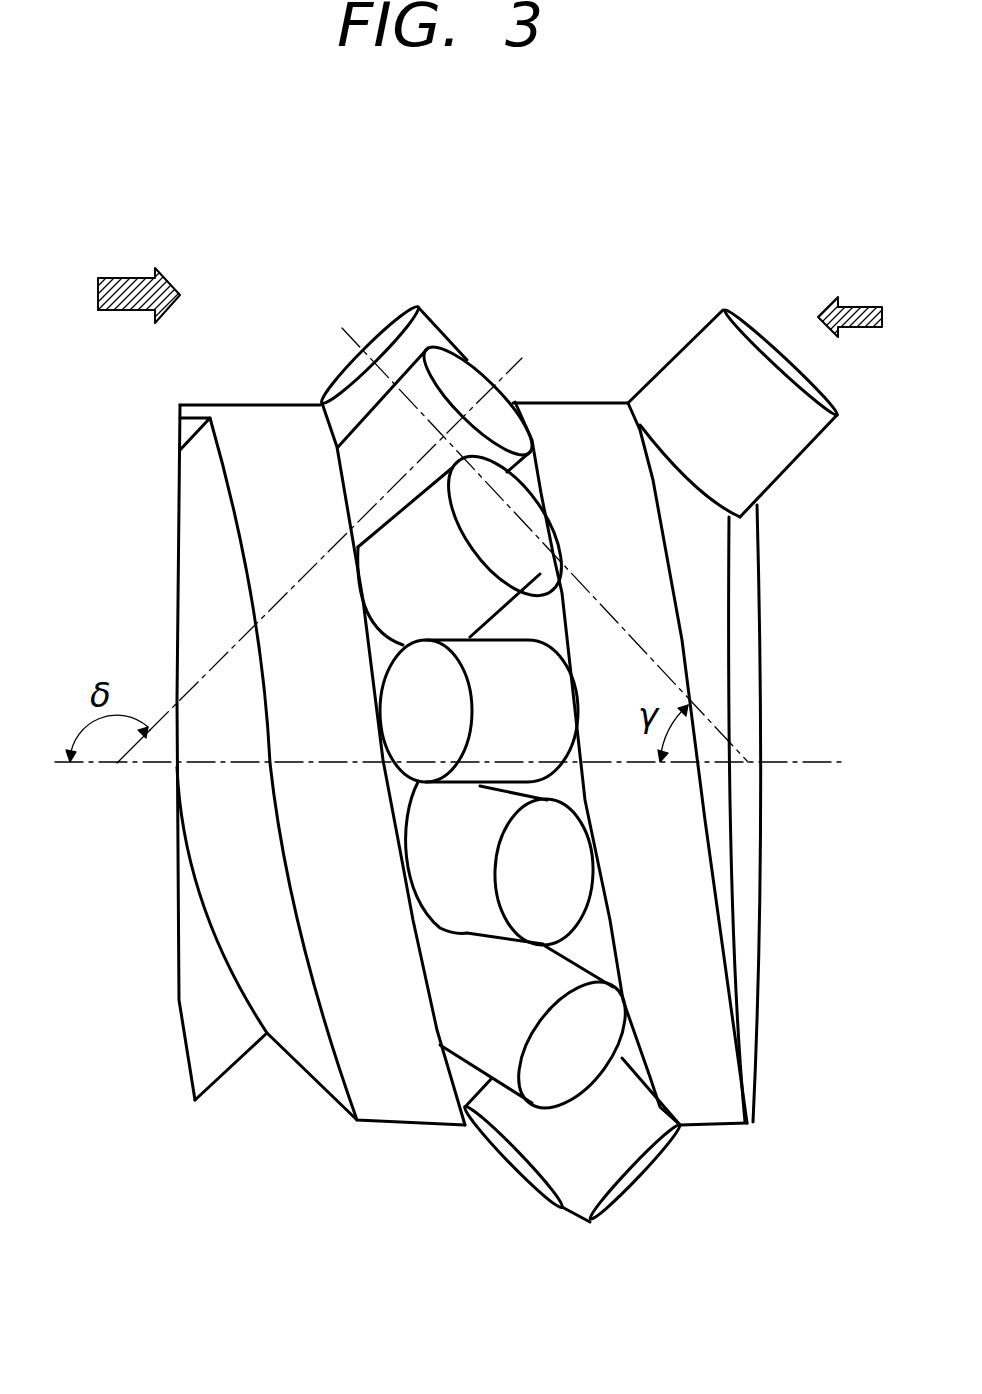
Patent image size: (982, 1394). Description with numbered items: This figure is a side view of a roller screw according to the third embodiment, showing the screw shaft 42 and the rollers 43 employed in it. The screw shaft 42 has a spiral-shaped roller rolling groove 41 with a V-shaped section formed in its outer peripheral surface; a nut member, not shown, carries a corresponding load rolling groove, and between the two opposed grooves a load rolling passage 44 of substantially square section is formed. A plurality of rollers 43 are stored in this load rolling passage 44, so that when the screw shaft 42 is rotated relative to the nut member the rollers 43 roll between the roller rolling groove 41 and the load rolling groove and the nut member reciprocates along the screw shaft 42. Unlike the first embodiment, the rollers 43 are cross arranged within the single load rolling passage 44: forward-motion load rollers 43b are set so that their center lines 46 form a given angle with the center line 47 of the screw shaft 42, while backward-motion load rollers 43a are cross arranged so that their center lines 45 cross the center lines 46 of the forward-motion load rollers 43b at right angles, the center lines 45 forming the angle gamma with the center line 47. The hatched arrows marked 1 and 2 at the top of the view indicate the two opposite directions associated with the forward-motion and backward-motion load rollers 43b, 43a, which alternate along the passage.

The rotation direction of first ring 1 is at (139, 276).
The rotation direction of second ring 2 is at (850, 292).
The roller rolling groove 41 is at (540, 625).
The screw shaft 42 is at (717, 677).
The rollers 43 is at (546, 214).
The backward-motion load rollers 43a is at (386, 340).
The forward-motion load rollers 43b is at (468, 378).
The load rolling passage 44 is at (550, 630).
The center lines of the backward-motion load rollers 45 is at (663, 608).
The center lines of the forward-motion load rollers 46 is at (215, 643).
The center line of the screw shaft 47 is at (768, 757).